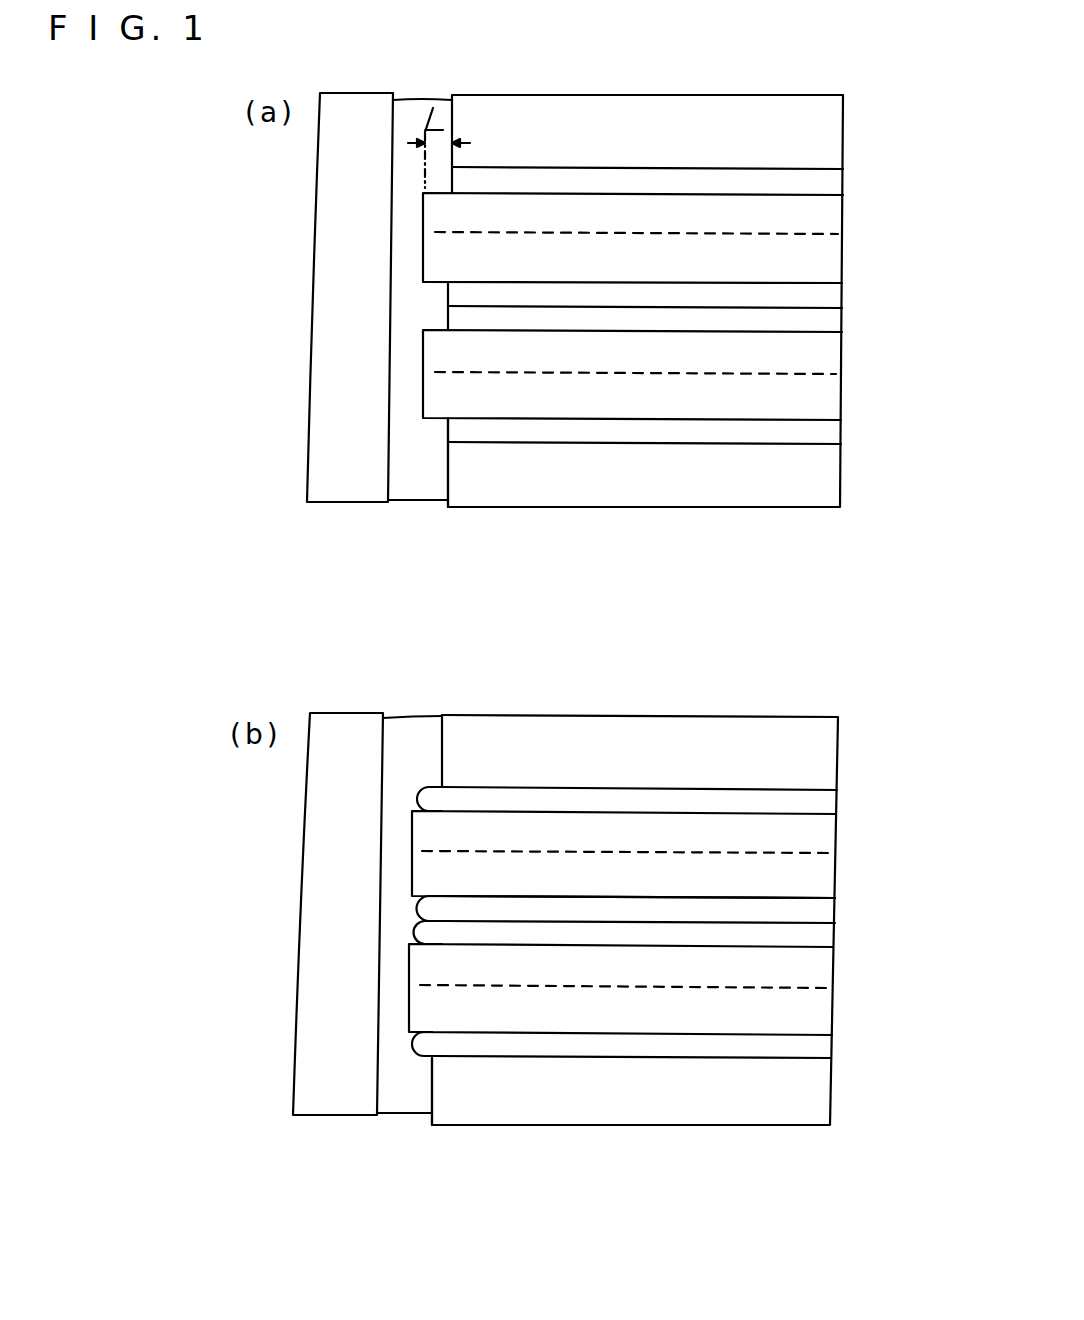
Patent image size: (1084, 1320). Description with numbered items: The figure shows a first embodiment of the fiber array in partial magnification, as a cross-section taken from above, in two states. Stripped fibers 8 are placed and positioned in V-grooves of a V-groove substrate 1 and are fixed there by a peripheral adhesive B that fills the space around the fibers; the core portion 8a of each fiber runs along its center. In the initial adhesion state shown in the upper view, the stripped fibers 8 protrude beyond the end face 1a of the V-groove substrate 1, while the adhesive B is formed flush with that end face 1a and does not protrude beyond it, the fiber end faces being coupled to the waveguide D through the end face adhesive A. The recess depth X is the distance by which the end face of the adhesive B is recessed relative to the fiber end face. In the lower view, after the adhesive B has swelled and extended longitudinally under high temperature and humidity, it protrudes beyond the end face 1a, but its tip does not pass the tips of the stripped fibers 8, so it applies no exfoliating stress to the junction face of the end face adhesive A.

The V-groove substrate 1 is at (835, 131).
The end face of the V-groove substrate 1a is at (445, 477).
The stripped fibers 8 is at (815, 215).
The core portion 8a is at (812, 235).
The peripheral adhesive B is at (840, 181).
The end face adhesive A is at (413, 480).
The waveguide D is at (355, 475).
The recess depth X is at (438, 143).